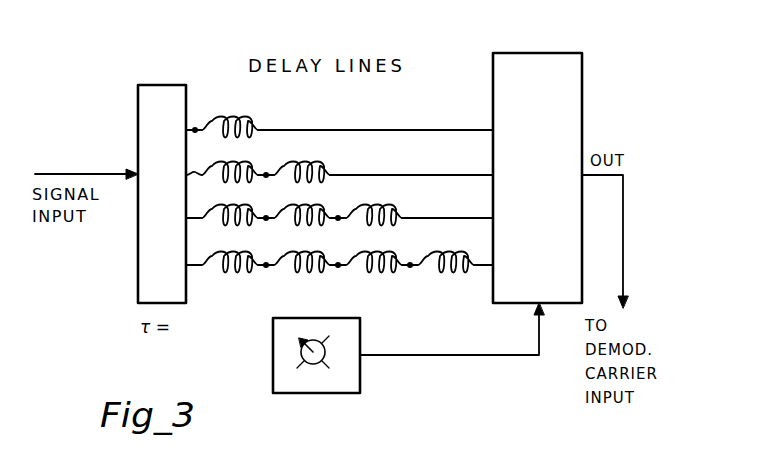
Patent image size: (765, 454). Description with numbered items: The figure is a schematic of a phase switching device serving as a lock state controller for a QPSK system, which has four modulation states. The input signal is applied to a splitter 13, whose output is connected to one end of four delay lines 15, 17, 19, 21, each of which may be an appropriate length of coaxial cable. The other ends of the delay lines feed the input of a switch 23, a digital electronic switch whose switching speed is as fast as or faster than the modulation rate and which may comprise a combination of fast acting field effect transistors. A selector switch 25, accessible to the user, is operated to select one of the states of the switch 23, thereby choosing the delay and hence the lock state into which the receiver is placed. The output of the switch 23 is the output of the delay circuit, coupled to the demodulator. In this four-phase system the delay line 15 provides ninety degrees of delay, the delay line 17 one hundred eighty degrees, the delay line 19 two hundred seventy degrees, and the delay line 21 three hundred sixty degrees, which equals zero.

The splitter 13 is at (152, 85).
The delay line 15 is at (259, 128).
The delay line 17 is at (331, 173).
The delay line 19 is at (403, 216).
The delay line 21 is at (447, 271).
The switch 23 is at (524, 53).
The selector switch 25 is at (320, 318).